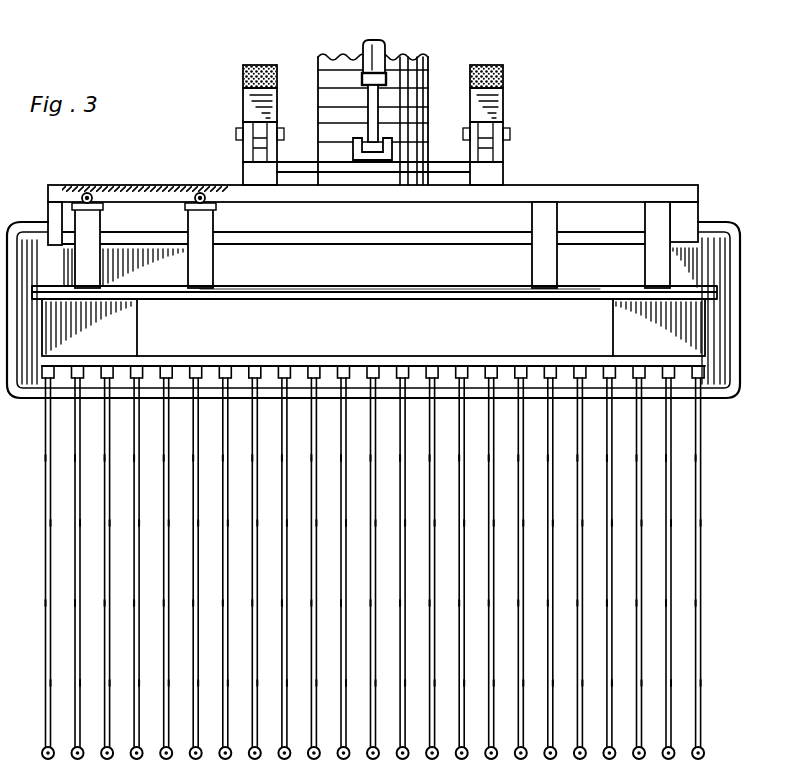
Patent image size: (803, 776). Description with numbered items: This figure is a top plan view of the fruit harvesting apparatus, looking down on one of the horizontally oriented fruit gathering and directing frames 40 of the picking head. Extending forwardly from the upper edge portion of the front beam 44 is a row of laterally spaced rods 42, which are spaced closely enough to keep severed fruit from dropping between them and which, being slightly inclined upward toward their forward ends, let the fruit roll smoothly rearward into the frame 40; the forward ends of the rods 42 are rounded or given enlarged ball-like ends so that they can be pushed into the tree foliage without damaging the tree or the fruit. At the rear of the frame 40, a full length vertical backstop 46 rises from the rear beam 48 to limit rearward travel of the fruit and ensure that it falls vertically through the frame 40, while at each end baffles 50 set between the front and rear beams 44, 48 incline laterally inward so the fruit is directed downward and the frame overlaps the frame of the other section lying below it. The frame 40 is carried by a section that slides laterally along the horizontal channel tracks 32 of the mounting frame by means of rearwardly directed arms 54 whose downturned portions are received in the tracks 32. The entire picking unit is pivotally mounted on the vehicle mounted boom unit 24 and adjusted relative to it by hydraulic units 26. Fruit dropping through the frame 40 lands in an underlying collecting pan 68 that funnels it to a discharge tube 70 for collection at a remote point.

The vehicle mounted boom unit 24 is at (503, 112).
The hydraulic units 26 is at (370, 60).
The discharge tube 70 is at (418, 76).
The channel tracks 32 is at (393, 215).
The rearwardly directed arms 54 is at (197, 268).
The collecting pan 68 is at (712, 260).
The vertical backstop 46 is at (300, 295).
The rear beam 48 is at (418, 290).
The front beam 44 is at (448, 357).
The baffles 50 is at (120, 335).
The fruit gathering and directing frames 40 is at (722, 340).
The rods 42 is at (697, 592).